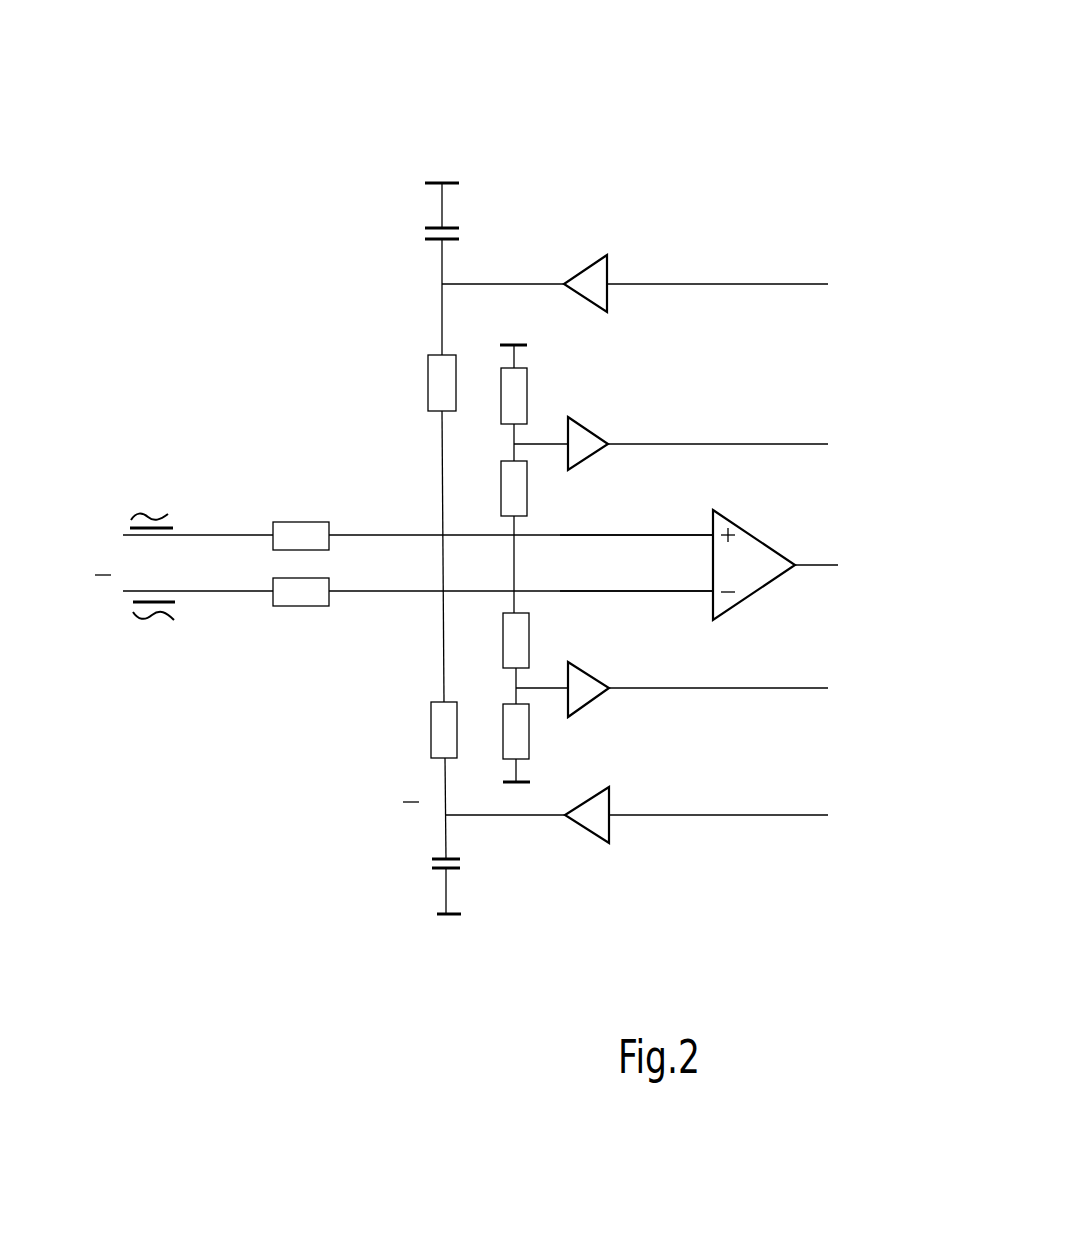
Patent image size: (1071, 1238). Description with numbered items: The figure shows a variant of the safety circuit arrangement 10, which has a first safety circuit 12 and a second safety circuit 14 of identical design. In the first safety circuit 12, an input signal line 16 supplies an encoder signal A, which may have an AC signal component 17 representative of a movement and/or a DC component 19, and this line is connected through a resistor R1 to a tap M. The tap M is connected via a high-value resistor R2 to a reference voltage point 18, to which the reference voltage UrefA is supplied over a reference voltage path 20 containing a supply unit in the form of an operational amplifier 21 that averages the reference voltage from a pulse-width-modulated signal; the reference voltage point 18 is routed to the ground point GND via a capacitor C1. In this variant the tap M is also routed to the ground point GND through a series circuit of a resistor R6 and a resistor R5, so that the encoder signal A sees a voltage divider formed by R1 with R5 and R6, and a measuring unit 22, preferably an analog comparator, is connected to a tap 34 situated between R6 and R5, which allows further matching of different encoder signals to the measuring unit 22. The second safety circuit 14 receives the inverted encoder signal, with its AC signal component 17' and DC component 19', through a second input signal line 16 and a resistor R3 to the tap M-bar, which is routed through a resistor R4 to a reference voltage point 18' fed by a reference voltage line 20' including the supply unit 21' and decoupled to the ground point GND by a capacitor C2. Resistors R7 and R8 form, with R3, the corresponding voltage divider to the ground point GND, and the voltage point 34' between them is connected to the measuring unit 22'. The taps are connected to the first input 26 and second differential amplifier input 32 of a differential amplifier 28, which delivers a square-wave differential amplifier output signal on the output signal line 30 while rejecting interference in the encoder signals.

The safety circuit arrangement 10 is at (642, 112).
The first safety circuit 12 is at (245, 325).
The second safety circuit 14 is at (305, 811).
The input signal line 16 is at (233, 535).
The AC signal component 17 is at (119, 478).
The AC signal component 17' is at (145, 717).
The reference voltage point 18 is at (489, 234).
The reference voltage point 18' is at (365, 898).
The DC component 19 is at (161, 460).
The DC component 19' is at (126, 660).
The reference voltage path 20 is at (717, 230).
The reference voltage line 20' is at (726, 893).
The operational amplifier 21 is at (566, 234).
The supply unit 21' is at (527, 901).
The measuring unit 22 is at (671, 408).
The measuring unit 22' is at (672, 708).
The first input 26 is at (618, 535).
The differential amplifier 28 is at (770, 540).
The output signal line 30 is at (812, 566).
The second differential amplifier input 32 is at (608, 592).
The tap 34 is at (392, 424).
The voltage point 34' is at (437, 661).
The resistor R1 is at (301, 521).
The resistor R2 is at (427, 383).
The resistor R3 is at (301, 606).
The resistor R4 is at (427, 730).
The resistor R5 is at (531, 396).
The resistor R6 is at (531, 488).
The resistor R7 is at (533, 640).
The resistor R8 is at (533, 731).
The capacitor C1 is at (460, 228).
The capacitor C2 is at (463, 858).
The ground point GND is at (472, 552).
The tap M is at (473, 599).